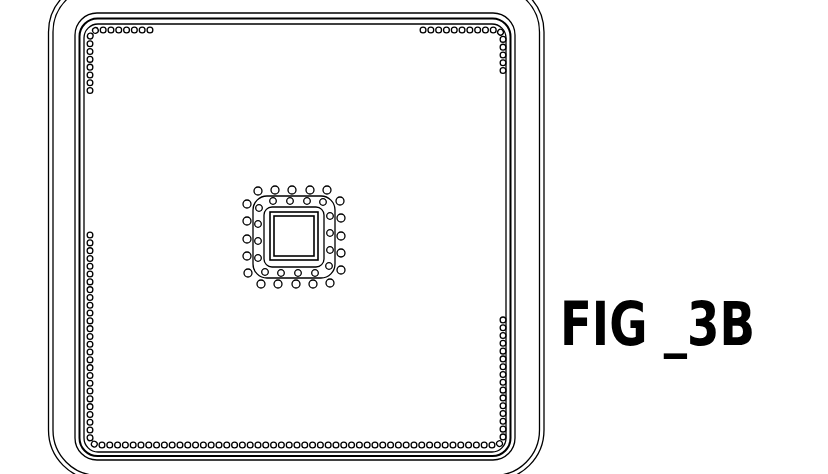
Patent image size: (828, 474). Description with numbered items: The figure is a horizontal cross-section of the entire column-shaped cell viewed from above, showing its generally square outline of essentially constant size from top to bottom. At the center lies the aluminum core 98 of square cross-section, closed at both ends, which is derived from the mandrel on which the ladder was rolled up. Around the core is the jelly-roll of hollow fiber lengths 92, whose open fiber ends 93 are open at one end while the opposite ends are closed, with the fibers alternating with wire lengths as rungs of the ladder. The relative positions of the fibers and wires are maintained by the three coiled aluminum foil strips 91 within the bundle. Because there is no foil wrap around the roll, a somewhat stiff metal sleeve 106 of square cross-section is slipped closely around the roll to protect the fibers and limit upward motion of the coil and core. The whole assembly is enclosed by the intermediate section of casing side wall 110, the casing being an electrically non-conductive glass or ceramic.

The intermediate section of casing side wall 110 is at (545, 120).
The metal sleeve 106 is at (347, 236).
The aluminum foil strips 91 is at (93, 287).
The hollow fiber lengths 92 is at (284, 287).
The open fiber ends 93 is at (342, 257).
The aluminum core of square cross-section 98 is at (343, 217).